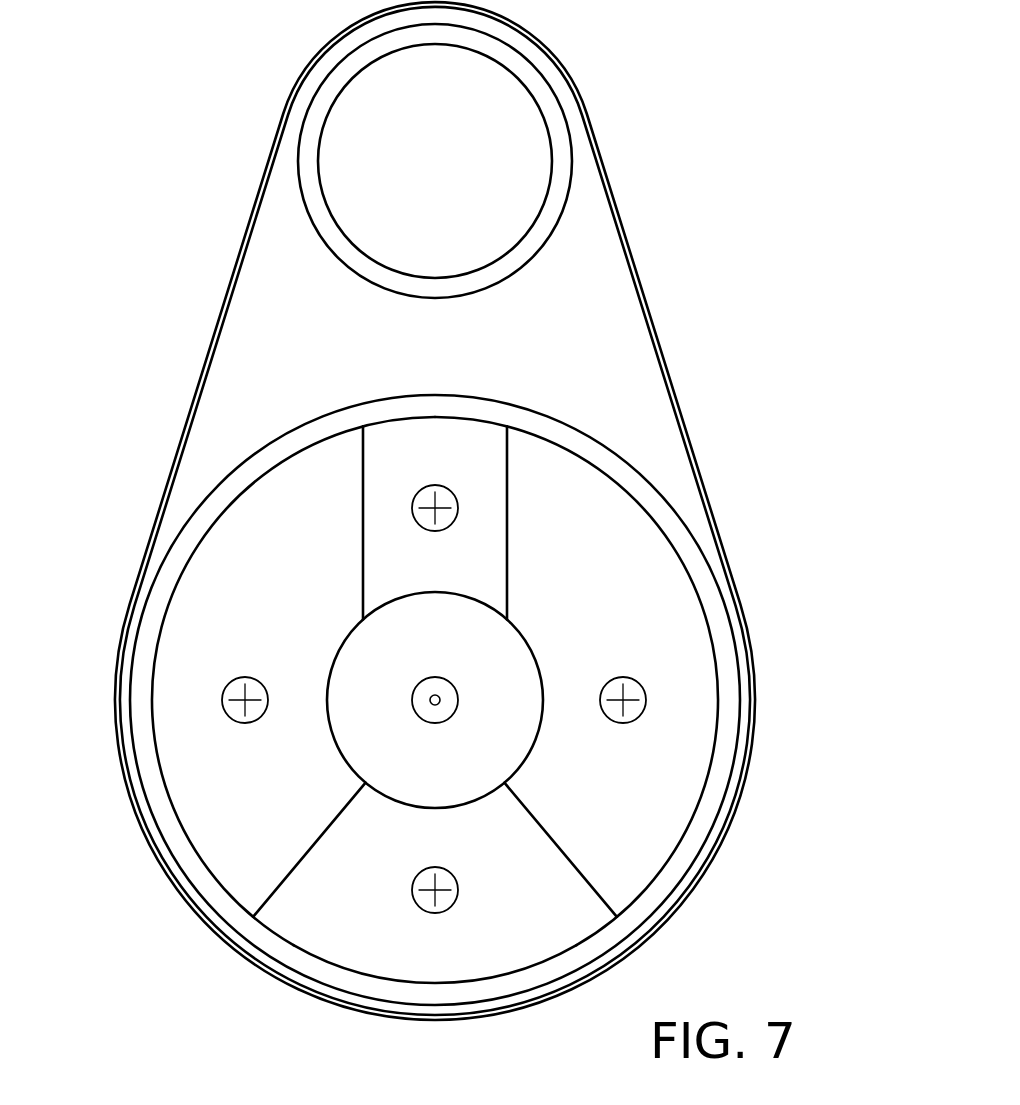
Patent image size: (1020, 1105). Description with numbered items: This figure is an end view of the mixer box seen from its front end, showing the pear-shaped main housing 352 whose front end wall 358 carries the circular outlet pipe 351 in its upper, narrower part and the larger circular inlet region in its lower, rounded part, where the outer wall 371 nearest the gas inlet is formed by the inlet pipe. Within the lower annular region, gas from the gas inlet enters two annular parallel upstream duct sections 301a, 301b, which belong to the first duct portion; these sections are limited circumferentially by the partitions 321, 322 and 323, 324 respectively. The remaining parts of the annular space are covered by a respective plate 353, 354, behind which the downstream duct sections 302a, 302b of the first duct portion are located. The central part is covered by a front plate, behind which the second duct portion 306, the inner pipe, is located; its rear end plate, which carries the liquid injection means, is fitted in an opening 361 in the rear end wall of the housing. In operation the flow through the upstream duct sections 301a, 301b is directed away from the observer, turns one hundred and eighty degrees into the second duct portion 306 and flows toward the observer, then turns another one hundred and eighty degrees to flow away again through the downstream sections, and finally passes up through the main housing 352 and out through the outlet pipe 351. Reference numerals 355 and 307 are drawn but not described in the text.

The outlet pipe 351 is at (560, 100).
The front end wall 358 is at (588, 266).
The main housing 352 is at (192, 271).
The partition 321 is at (363, 507).
The partition 322 is at (507, 507).
The upstream duct section 301a is at (454, 521).
The downstream duct section 302a is at (260, 596).
The downstream duct section 302b is at (610, 596).
The plate 353 is at (197, 702).
The plate 354 is at (673, 702).
The second duct portion 306 is at (385, 703).
The opening 361 is at (540, 737).
The hub recess 355 is at (397, 735).
The partition 324 is at (324, 830).
The partition 323 is at (543, 828).
The lower body 307 is at (186, 975).
The upstream duct section 301b is at (357, 922).
The outer wall 371 is at (431, 984).